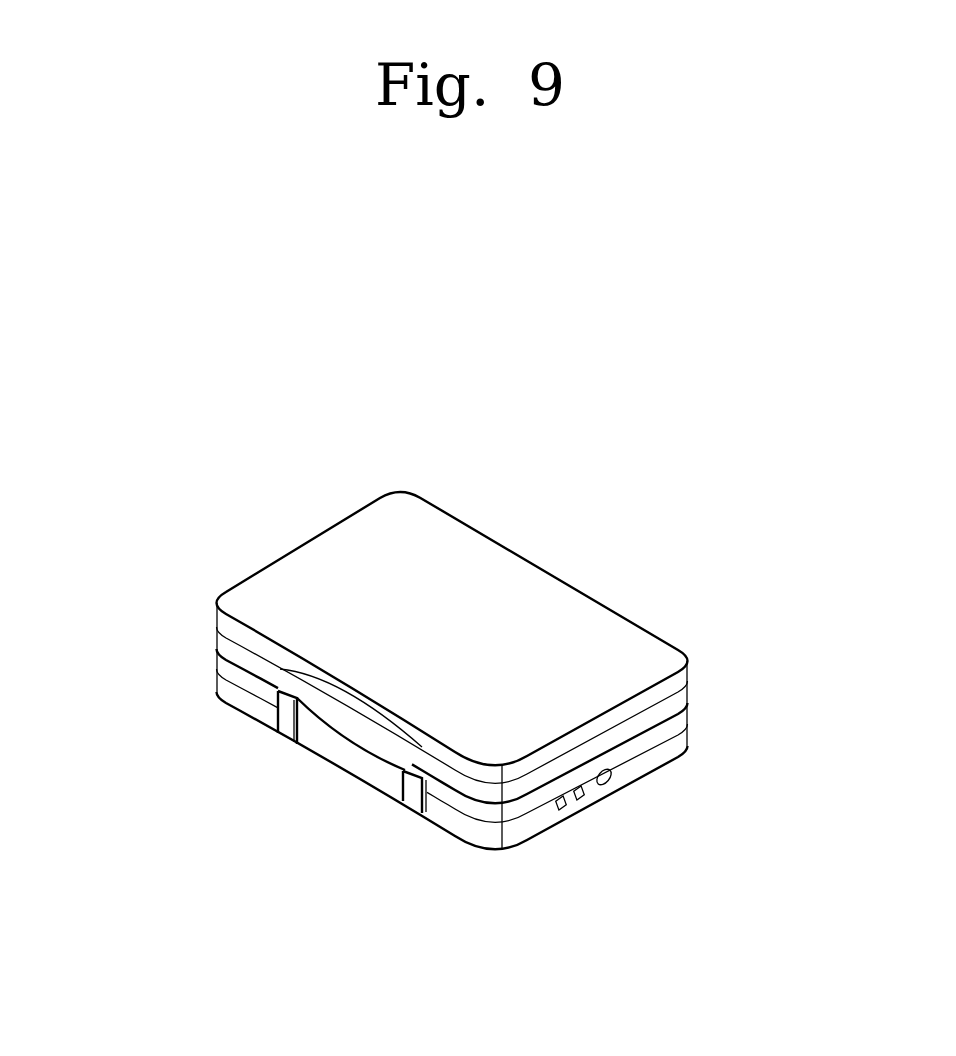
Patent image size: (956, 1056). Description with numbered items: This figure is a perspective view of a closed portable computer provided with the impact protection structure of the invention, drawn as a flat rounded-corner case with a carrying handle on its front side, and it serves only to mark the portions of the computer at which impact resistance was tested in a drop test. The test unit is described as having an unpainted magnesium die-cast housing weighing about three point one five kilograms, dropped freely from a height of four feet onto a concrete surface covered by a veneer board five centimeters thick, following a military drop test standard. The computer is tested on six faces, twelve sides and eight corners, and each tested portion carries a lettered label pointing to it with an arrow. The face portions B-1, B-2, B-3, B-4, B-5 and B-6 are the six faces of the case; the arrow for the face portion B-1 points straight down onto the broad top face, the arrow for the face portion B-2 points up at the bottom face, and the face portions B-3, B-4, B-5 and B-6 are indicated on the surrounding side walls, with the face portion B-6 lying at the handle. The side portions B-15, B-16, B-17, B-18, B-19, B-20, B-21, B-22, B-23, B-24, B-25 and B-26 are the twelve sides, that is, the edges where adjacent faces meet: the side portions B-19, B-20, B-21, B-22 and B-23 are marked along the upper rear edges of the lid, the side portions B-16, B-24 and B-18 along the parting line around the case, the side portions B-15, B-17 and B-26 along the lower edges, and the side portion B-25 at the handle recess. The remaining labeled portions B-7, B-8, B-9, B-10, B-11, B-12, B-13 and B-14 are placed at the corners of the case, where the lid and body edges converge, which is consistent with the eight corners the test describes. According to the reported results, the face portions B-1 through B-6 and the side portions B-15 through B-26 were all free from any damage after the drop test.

The tested face portion B-1 is at (438, 690).
The tested face portion B-2 is at (440, 827).
The tested face portion B-3 is at (618, 753).
The tested face portion B-4 is at (565, 560).
The tested face portion B-5 is at (290, 537).
The tested face portion B-6 is at (357, 732).
The front side of body with indicator and buttons B-7 is at (510, 773).
The bottom front edge B-8 is at (512, 850).
The right corner edge of lid B-9 is at (688, 659).
The right corner edge of body B-10 is at (688, 745).
The rear corner of lid B-11 is at (399, 490).
The rear right edge of lid B-12 is at (457, 513).
The left corner edge of lid B-13 is at (215, 608).
The left corner edge of body B-14 is at (215, 693).
The tested side portion B-15 is at (510, 810).
The tested side portion B-16 is at (605, 720).
The tested side portion B-17 is at (628, 788).
The tested side portion B-18 is at (688, 702).
The tested side portion B-19 is at (518, 543).
The tested side portion B-20 is at (603, 597).
The tested side portion B-21 is at (428, 495).
The tested side portion B-22 is at (330, 518).
The tested side portion B-23 is at (248, 562).
The tested side portion B-24 is at (215, 650).
The tested side portion B-25 is at (363, 697).
The tested side portion B-26 is at (343, 788).